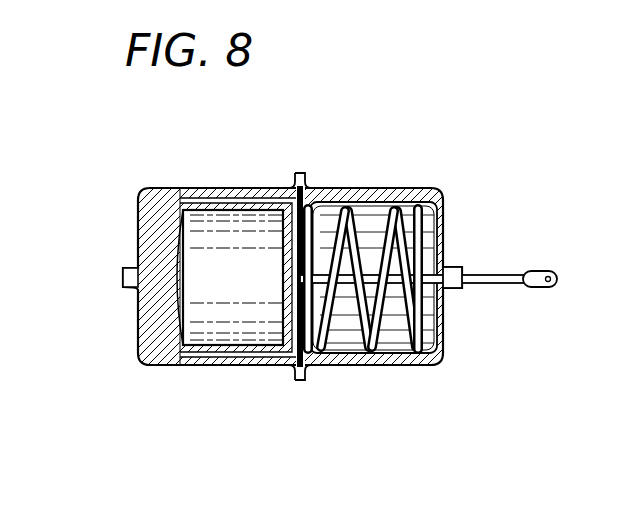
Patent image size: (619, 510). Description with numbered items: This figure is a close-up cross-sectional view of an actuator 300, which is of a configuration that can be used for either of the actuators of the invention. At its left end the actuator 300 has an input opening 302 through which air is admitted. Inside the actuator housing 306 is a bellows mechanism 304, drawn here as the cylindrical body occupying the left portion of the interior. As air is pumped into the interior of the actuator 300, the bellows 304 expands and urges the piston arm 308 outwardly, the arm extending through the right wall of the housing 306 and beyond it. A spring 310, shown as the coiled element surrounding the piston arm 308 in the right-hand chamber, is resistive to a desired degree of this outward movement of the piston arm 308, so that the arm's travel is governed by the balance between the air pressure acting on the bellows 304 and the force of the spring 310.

The actuator 300 is at (235, 158).
The input opening 302 is at (123, 268).
The bellows mechanism 304 is at (146, 360).
The actuator housing 306 is at (383, 363).
The piston arm 308 is at (497, 283).
The spring 310 is at (445, 200).